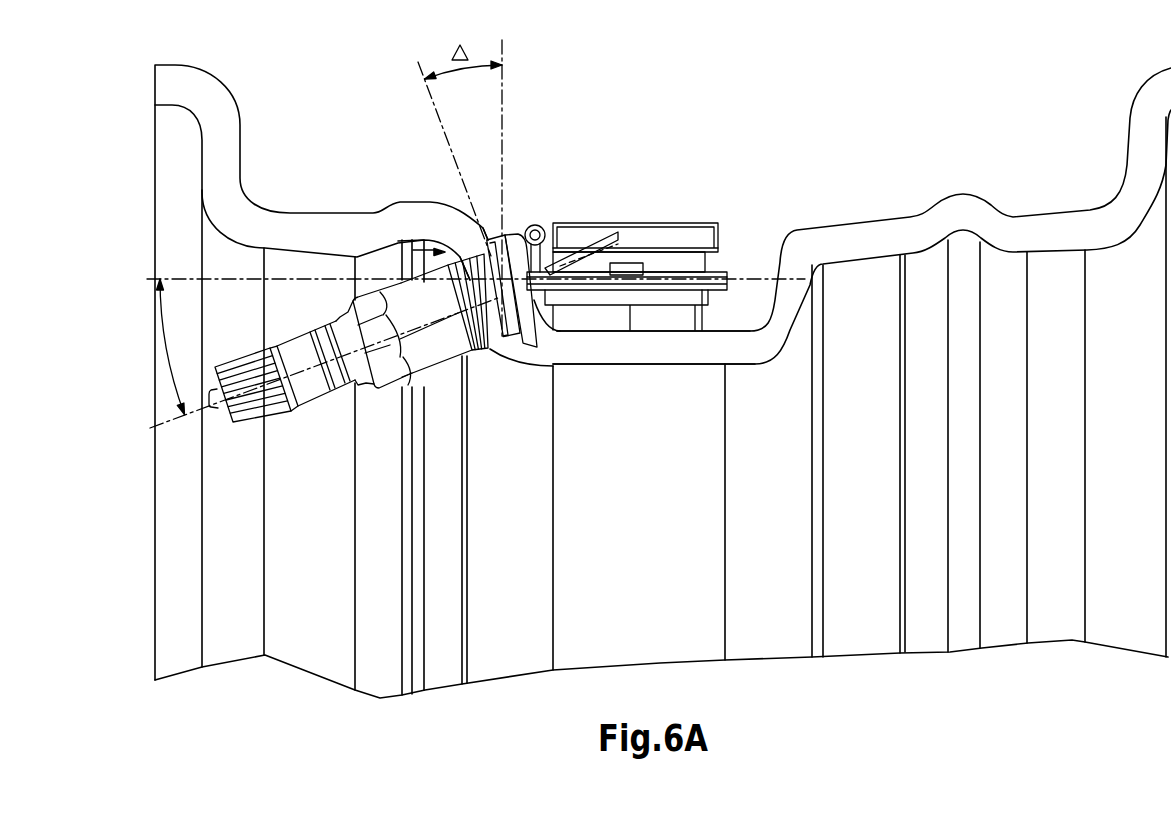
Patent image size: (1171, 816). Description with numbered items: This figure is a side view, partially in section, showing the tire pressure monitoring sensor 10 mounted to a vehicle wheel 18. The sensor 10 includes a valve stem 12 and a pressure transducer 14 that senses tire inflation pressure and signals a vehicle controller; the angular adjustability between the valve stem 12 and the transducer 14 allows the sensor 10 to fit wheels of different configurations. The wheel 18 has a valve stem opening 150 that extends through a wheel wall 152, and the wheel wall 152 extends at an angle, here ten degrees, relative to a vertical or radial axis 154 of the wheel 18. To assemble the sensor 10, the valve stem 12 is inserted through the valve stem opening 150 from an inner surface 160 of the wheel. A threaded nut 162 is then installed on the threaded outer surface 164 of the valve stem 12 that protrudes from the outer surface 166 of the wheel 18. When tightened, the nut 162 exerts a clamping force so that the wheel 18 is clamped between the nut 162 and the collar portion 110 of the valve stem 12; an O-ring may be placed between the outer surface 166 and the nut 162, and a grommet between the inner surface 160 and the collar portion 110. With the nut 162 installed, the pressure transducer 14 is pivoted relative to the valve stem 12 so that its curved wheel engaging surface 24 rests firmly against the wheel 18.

The tire pressure monitoring sensor 10 is at (650, 158).
The valve stem 12 is at (367, 314).
The pressure transducer 14 is at (683, 247).
The vehicle wheel 18 is at (877, 240).
The wheel engaging surface 24 is at (662, 333).
The collar portion 110 is at (531, 350).
The valve stem opening 150 is at (483, 257).
The wheel wall 152 is at (492, 343).
The vertical or radial axis 154 is at (503, 97).
The inner surface of the wheel 160 is at (488, 222).
The threaded nut 162 is at (427, 350).
The threaded outer surface 164 is at (476, 362).
The outer surface of the wheel 166 is at (410, 303).